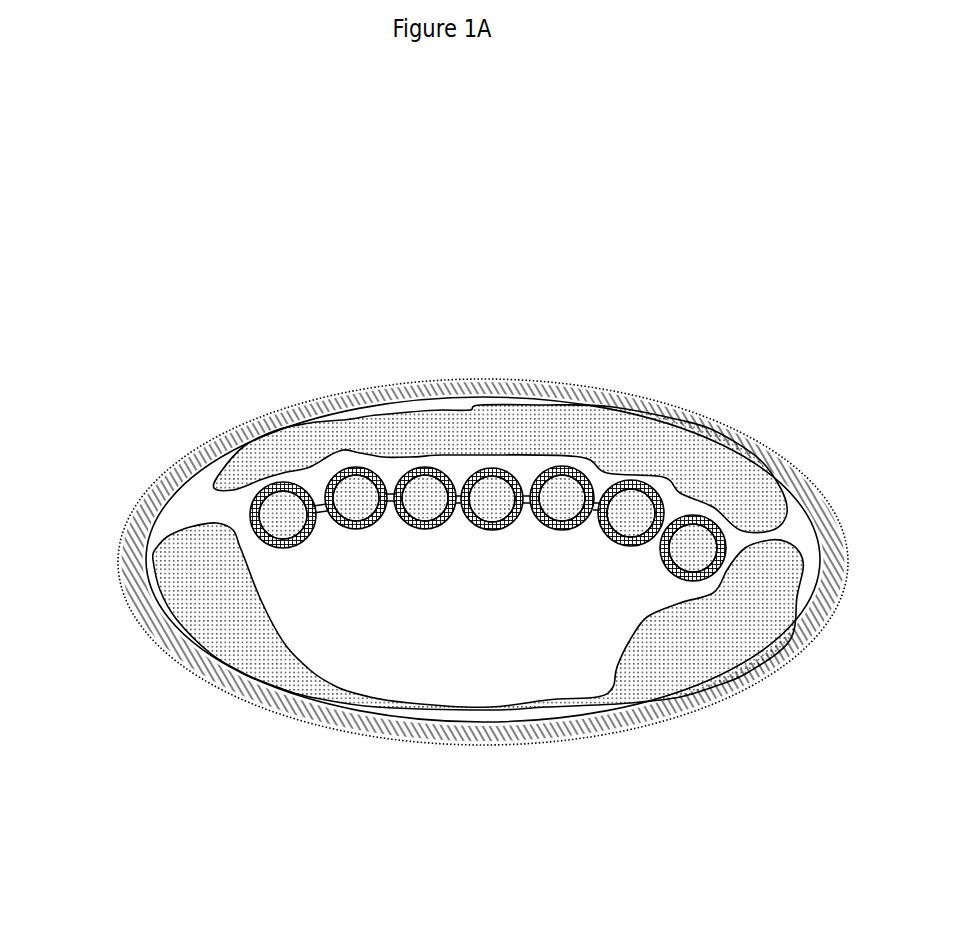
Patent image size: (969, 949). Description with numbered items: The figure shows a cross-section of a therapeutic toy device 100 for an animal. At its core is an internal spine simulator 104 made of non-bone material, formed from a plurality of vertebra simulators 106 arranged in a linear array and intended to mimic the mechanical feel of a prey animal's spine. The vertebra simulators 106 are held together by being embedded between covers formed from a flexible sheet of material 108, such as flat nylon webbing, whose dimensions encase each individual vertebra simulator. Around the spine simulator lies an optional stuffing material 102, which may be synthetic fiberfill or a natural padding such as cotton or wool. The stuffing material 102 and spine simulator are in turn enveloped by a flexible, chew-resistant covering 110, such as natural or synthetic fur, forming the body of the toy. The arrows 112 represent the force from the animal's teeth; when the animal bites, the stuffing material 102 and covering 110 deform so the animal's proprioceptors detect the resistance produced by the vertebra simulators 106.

The therapeutic toy device 100 is at (120, 270).
The stuffing material 102 is at (782, 567).
The internal spine simulator 104 is at (238, 512).
The vertebra simulators 106 is at (488, 523).
The flexible sheet of material 108 is at (275, 553).
The chew-resistant covering 110 is at (132, 588).
The arrows 112 is at (347, 445).